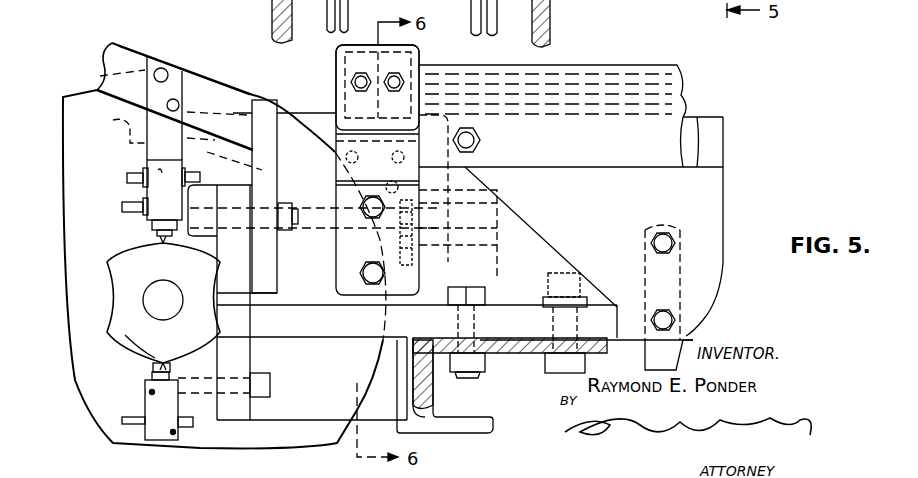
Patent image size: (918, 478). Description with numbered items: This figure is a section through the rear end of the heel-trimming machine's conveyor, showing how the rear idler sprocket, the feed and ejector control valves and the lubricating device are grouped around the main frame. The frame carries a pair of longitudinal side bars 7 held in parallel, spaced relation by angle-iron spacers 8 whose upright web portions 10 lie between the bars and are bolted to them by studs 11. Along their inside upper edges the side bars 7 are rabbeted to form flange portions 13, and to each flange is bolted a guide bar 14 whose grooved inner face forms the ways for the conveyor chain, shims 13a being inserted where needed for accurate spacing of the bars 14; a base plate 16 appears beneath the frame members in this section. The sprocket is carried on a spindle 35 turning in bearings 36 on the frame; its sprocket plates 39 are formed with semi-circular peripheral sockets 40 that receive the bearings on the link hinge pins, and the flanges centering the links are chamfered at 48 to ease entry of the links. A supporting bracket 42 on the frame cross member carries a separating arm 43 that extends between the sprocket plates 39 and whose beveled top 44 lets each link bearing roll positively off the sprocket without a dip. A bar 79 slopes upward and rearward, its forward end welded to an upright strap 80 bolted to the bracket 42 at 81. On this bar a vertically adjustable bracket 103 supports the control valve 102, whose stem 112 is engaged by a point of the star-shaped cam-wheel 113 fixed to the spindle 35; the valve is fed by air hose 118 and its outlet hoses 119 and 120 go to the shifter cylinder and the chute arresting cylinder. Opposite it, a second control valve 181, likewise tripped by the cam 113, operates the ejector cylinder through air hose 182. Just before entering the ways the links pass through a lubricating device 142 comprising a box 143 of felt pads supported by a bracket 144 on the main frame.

The side bars 7 is at (718, 196).
The angle-iron spacers 8 is at (690, 346).
The upright web portions 10 is at (660, 228).
The studs 11 is at (668, 305).
The flange portions 13 is at (713, 135).
The shims 13a is at (723, 118).
The bar 14 is at (678, 122).
The base plate 16 is at (606, 350).
The shaft or spindle 35 is at (163, 290).
The bearings 36 is at (133, 347).
The sprocket members in the form of plates 39 is at (478, 15).
The semi-circular peripheral sockets 40 is at (352, 8).
The supporting bracket 42 is at (524, 222).
The separating arm 43 is at (315, 115).
The beveled top 44 is at (145, 117).
The chamfered edges 48 is at (290, 43).
The bar 79 is at (135, 58).
The upright strap 80 is at (278, 150).
The bolted connection 81 is at (290, 233).
The control valve 102 is at (178, 166).
The bracket 103 is at (178, 132).
The valve stem 112 is at (157, 232).
The star-shaped cam-wheel 113 is at (112, 290).
The hose 118 is at (200, 177).
The outlet hose 119 is at (127, 178).
The outlet hose 120 is at (122, 207).
The lubricating device 142 is at (333, 60).
The box 143 is at (420, 50).
The bracket 144 is at (340, 263).
The control valve 181 is at (146, 397).
The air hose 182 is at (190, 428).